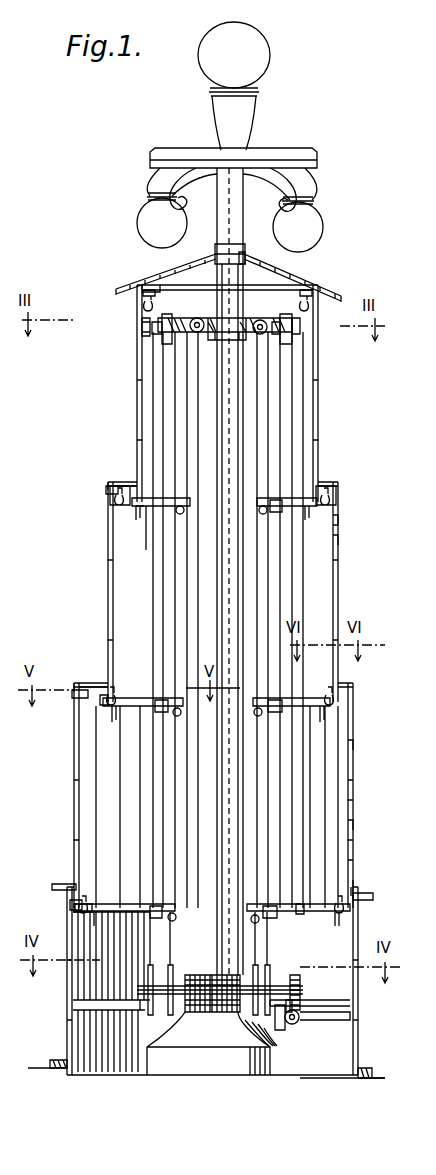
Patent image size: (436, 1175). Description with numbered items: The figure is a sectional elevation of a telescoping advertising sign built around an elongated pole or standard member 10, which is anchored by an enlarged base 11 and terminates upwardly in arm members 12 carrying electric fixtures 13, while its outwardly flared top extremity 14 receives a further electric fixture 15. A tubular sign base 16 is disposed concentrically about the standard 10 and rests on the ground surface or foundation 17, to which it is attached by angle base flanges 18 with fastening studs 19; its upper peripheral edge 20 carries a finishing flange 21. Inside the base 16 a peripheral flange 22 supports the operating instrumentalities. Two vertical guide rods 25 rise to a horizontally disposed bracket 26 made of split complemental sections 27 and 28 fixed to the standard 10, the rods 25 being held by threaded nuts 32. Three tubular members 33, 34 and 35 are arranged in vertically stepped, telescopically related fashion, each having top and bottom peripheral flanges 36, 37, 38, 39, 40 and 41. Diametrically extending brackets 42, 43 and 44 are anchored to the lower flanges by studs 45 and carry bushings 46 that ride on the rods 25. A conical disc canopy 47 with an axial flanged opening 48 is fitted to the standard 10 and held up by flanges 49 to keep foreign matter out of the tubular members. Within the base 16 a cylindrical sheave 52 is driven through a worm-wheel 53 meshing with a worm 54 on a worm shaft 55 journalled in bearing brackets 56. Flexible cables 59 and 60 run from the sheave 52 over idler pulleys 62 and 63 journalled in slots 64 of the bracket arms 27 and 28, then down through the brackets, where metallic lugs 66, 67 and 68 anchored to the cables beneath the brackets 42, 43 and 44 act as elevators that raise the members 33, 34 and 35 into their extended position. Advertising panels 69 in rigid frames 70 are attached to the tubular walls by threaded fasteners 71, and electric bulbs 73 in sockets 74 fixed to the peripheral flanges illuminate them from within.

The pole or standard member 10 is at (232, 455).
The enlarged base 11 is at (200, 1045).
The arm members 12 is at (294, 181).
The electric fixtures 13 is at (150, 222).
The top extremity 14 is at (243, 110).
The electric fixture 15 is at (255, 48).
The tubular sign base 16 is at (358, 998).
The ground surface or foundation 17 is at (330, 1078).
The angle base flanges 18 is at (372, 1078).
The fastening studs 19 is at (50, 1062).
The peripheral edge 20 is at (355, 888).
The finishing flange 21 is at (373, 897).
The peripheral flange 22 is at (320, 1000).
The vertical guide rods 25 is at (150, 790).
The horizontally disposed bracket 26 is at (159, 330).
The bracket section 27 is at (143, 323).
The bracket section 28 is at (296, 330).
The threaded nuts 32 is at (158, 288).
The tubular member 33 is at (356, 703).
The tubular member 34 is at (340, 503).
The tubular member 35 is at (320, 395).
The top peripheral flange 36 is at (96, 683).
The bottom peripheral flange 37 is at (76, 912).
The top peripheral flange 38 is at (118, 486).
The bottom peripheral flange 39 is at (100, 705).
The top peripheral flange 40 is at (150, 293).
The bottom peripheral flange 41 is at (146, 536).
The diametrically extending bracket 42 is at (120, 906).
The diametrically extending bracket 43 is at (112, 686).
The diametrically extending bracket 44 is at (132, 475).
The studs 45 is at (136, 512).
The bushings 46 is at (270, 512).
The conical disc sheet member (canopy) 47 is at (298, 278).
The axial flanged opening 48 is at (215, 256).
The flanges 49 is at (242, 258).
The cylindrical sheave 52 is at (178, 975).
The worm-wheel 53 is at (295, 975).
The worm 54 is at (298, 1022).
The worm shaft 55 is at (350, 1016).
The bearing brackets 56 is at (283, 1030).
The flexible cable 59 is at (186, 583).
The flexible cable 60 is at (262, 592).
The idler pulley 62 is at (201, 320).
The idler pulley 63 is at (264, 322).
The slots 64 is at (236, 320).
The metallic lug 66 is at (222, 912).
The metallic lug 67 is at (180, 713).
The metallic lug 68 is at (190, 508).
The advertising panels 69 is at (354, 815).
The rigid frames 70 is at (340, 518).
The threaded fasteners 71 is at (340, 542).
The electric bulbs 73 is at (78, 700).
The sockets 74 is at (108, 493).